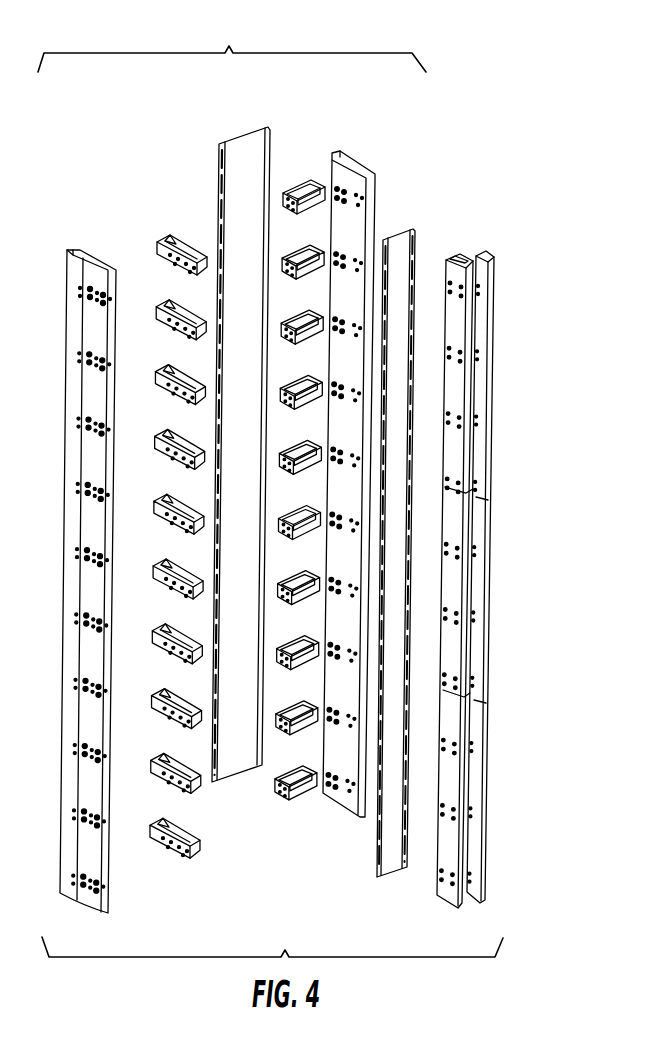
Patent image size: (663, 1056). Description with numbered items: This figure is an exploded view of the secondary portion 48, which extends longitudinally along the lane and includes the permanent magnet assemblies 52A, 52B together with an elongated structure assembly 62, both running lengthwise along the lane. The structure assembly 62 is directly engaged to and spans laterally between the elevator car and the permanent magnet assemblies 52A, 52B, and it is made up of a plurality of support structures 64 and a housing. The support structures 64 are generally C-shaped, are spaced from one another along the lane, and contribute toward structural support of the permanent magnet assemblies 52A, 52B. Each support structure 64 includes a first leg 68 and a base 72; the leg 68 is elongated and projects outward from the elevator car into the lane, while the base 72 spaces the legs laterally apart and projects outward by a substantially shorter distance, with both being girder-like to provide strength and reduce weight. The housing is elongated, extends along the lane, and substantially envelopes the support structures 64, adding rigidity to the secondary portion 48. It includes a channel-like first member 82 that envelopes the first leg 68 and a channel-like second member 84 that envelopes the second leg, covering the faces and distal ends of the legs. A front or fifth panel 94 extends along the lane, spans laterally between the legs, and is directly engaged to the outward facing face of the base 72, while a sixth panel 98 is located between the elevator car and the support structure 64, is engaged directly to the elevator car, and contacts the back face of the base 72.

The secondary portion 48 is at (497, 90).
The structure assembly 62 is at (232, 42).
The first member 82 is at (66, 337).
The first leg 68 is at (181, 250).
The sixth panel 98 is at (248, 132).
The base 72 is at (297, 186).
The second member 84 is at (362, 160).
The fifth panel 94 is at (385, 874).
The permanent magnet assembly 52A is at (455, 256).
The permanent magnet assembly 52B is at (494, 259).
The support structure 64 is at (244, 524).